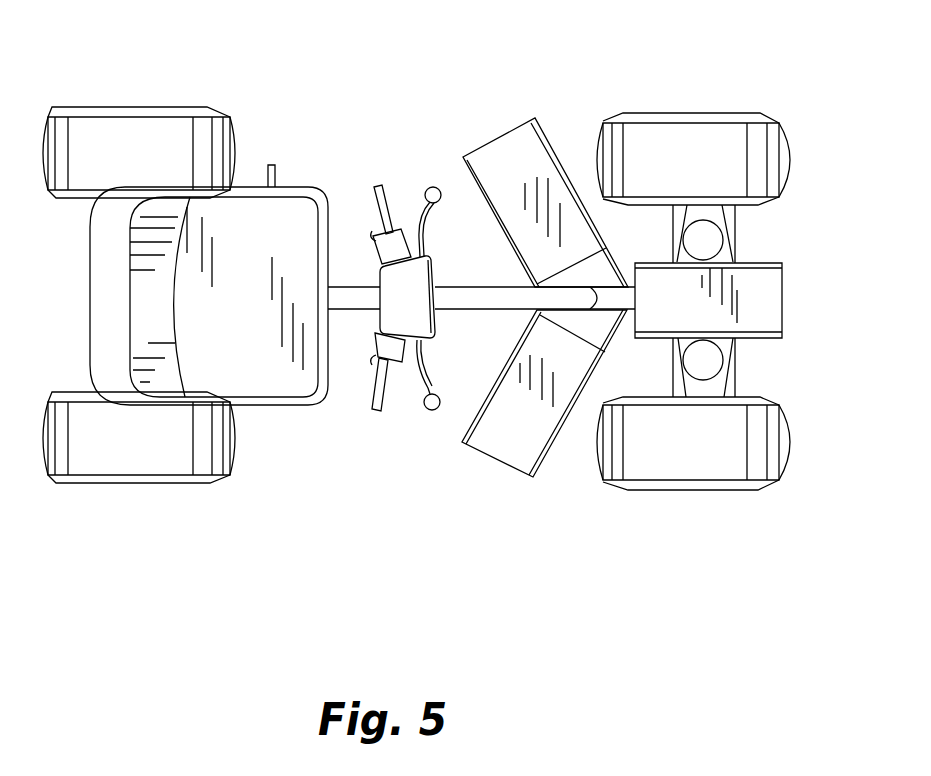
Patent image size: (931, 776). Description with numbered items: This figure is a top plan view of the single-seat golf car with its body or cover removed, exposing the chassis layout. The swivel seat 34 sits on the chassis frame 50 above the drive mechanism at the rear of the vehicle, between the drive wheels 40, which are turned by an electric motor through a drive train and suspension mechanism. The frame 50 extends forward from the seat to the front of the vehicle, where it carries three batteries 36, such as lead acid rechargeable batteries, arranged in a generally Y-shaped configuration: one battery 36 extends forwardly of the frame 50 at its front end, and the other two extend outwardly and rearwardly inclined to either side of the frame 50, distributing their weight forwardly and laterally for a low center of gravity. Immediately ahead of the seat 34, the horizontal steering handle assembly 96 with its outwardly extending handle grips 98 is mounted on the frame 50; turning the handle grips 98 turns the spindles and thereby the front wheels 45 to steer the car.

The swivel seat 34 is at (263, 222).
The battery 36 is at (523, 168).
The drive wheels 40 is at (143, 128).
The rear wheels 45 is at (737, 150).
The frame 50 is at (492, 297).
The steering handle assembly 96 is at (405, 285).
The handle grips 98 is at (392, 205).